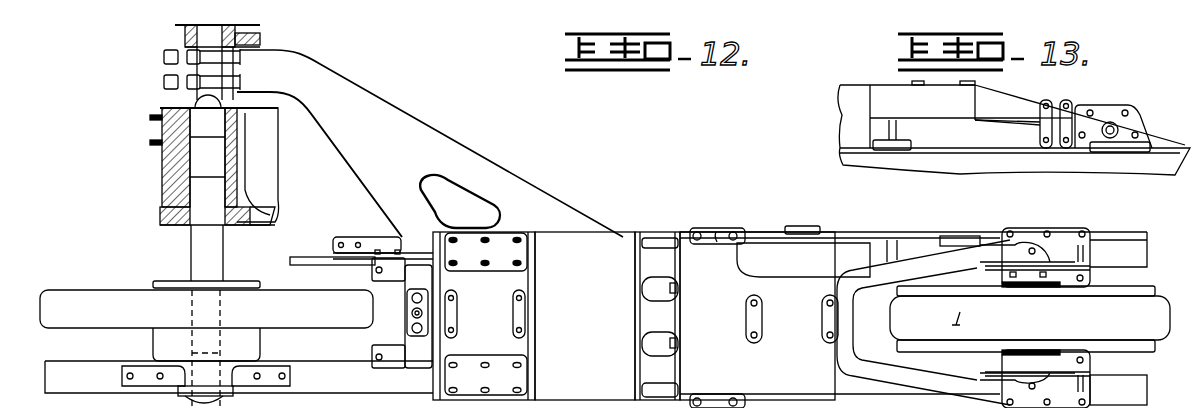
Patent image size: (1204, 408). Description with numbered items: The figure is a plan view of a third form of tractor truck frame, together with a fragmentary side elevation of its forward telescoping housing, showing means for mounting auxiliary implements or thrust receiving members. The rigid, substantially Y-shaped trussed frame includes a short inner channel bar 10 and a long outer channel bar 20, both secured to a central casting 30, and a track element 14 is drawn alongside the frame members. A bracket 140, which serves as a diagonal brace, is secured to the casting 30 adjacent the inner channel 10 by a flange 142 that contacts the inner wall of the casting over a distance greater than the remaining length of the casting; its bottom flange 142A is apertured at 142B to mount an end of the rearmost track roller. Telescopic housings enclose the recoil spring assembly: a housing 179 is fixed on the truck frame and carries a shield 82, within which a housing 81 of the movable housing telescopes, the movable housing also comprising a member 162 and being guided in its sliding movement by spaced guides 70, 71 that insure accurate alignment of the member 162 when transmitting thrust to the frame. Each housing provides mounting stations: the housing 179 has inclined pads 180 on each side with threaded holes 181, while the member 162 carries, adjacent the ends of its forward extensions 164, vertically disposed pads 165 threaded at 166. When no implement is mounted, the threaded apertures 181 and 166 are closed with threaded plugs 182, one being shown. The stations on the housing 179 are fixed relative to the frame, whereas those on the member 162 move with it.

In FIG. 12, the inner channel bar 10 is at (1115, 245).
In FIG. 12, the wheel 14 is at (398, 316).
In FIG. 12, the outer channel bar 20 is at (1125, 383).
In FIG. 13, the outer channel bar 20 is at (910, 156).
In FIG. 12, the central casting 30 is at (370, 272).
In FIG. 12, the guide 70 is at (1035, 228).
In FIG. 13, the guide 70 is at (1135, 138).
In FIG. 12, the guide 71 is at (709, 228).
In FIG. 13, the guide 71 is at (880, 140).
In FIG. 12, the housing 81 is at (662, 323).
In FIG. 13, the housing 81 is at (860, 107).
In FIG. 12, the shield 82 is at (592, 308).
In FIG. 12, the bracket 140 is at (440, 148).
In FIG. 12, the flange 142 is at (330, 264).
In FIG. 12, the bottom flange 142A is at (335, 248).
In FIG. 12, the aperture 142B is at (345, 238).
In FIG. 12, the member 162 is at (800, 358).
In FIG. 13, the member 162 is at (942, 107).
In FIG. 12, the forward extension 164 is at (978, 243).
In FIG. 13, the forward extension 164 is at (1003, 92).
In FIG. 12, the pad 165 is at (940, 238).
In FIG. 13, the pad 165 is at (1035, 112).
In FIG. 13, the threaded aperture 166 is at (1040, 132).
In FIG. 12, the housing 179 is at (492, 325).
In FIG. 12, the inclined pad 180 is at (503, 237).
In FIG. 12, the threaded hole 181 is at (482, 245).
In FIG. 12, the threaded plug 182 is at (515, 365).